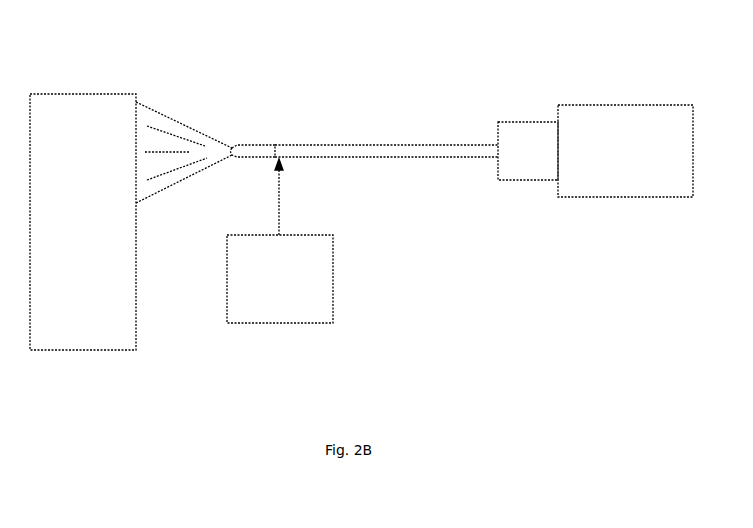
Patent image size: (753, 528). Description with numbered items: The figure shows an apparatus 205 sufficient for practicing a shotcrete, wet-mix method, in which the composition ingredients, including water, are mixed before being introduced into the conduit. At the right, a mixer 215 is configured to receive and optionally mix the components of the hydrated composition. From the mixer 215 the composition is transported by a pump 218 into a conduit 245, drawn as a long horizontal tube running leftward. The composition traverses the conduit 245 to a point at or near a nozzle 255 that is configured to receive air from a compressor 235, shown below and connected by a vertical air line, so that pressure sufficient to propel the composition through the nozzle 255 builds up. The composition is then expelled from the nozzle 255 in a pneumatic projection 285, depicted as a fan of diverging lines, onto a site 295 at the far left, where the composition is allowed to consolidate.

The apparatus 205 is at (505, 60).
The site 295 is at (127, 120).
The pneumatic projection 285 is at (197, 128).
The nozzle 255 is at (258, 145).
The conduit 245 is at (385, 145).
The pump 218 is at (548, 168).
The mixer 215 is at (683, 188).
The compressor 235 is at (326, 313).